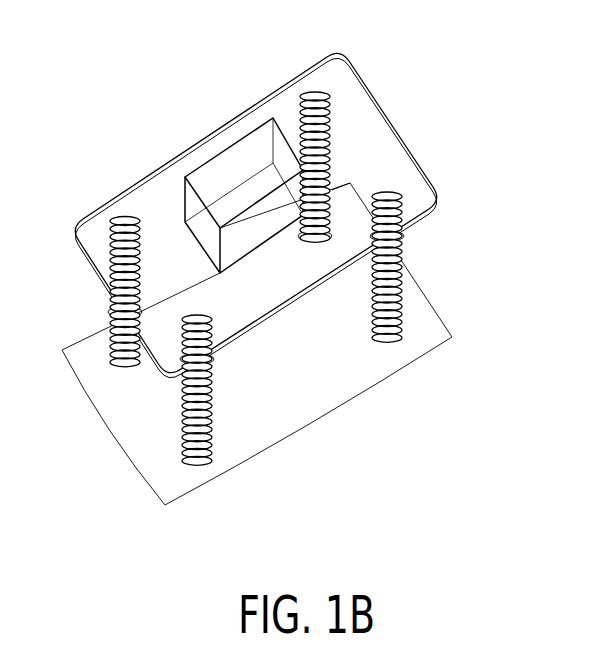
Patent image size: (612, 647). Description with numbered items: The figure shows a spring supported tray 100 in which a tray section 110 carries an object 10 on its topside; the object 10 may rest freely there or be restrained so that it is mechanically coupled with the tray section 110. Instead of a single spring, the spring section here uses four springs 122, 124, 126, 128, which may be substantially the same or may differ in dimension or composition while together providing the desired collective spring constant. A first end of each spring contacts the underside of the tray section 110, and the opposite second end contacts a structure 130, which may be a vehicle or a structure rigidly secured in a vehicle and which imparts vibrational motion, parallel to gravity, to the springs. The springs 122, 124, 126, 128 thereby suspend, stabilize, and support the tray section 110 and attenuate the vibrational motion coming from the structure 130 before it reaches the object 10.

The spring supported tray 100 is at (535, 203).
The tray section 110 is at (380, 92).
The object 10 is at (215, 167).
The spring 122 is at (110, 253).
The spring 124 is at (215, 380).
The spring 126 is at (315, 92).
The spring 128 is at (402, 247).
The structure 130 is at (338, 223).